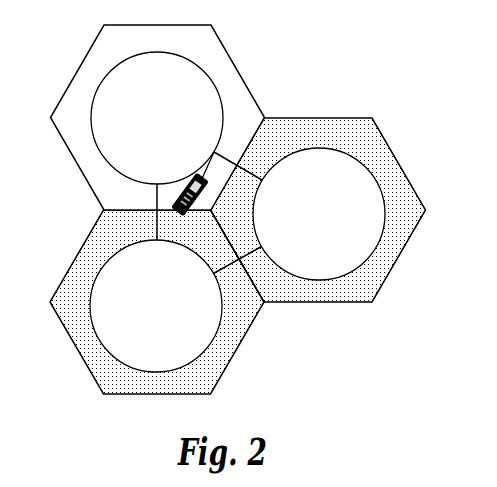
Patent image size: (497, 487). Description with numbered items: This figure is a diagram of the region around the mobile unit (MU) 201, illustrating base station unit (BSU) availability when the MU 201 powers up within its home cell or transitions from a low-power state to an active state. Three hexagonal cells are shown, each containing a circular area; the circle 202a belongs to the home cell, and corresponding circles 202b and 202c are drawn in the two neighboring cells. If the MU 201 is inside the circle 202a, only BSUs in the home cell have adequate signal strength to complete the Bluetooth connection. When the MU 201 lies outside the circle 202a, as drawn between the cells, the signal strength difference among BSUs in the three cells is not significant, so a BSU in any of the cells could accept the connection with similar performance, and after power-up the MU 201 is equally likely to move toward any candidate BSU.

The mobile unit (MU) 201 is at (173, 207).
The circle 202a is at (221, 88).
The cell served by base station B15 202b is at (380, 187).
The cell served by base station B12 202c is at (219, 332).